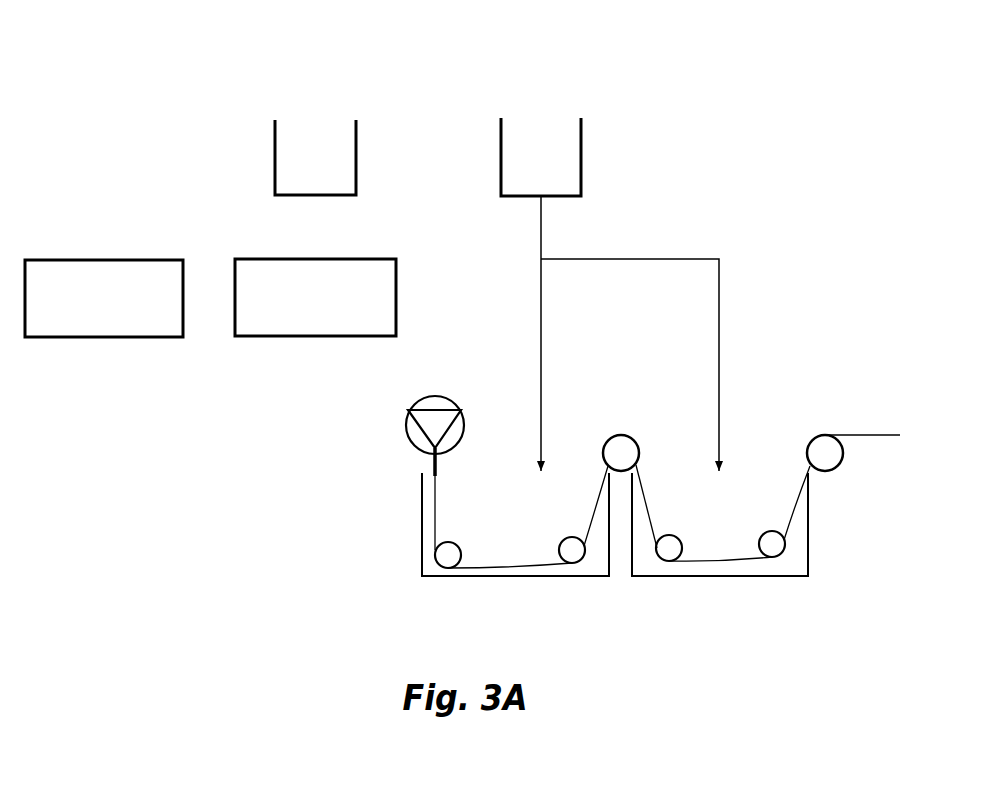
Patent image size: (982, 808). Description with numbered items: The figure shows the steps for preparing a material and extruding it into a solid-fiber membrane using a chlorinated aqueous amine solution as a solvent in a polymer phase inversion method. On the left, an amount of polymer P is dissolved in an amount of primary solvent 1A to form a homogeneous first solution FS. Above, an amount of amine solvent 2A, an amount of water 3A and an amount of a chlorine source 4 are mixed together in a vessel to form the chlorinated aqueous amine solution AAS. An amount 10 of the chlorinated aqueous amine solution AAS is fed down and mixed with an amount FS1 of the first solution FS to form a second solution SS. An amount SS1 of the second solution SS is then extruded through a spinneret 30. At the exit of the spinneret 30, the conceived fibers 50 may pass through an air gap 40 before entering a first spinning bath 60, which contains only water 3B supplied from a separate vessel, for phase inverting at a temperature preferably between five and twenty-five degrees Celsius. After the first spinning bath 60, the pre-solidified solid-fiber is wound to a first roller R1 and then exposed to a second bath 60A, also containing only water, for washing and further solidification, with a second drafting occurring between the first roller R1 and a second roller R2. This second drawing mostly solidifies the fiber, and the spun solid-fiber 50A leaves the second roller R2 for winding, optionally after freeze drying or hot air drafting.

The amine solvent 2A is at (290, 118).
The chlorine source 4 is at (317, 118).
The water 3A is at (343, 118).
The chlorinated aqueous amine solution AAS is at (315, 157).
The amount of chlorinated aqueous amine solution 10 is at (317, 257).
The polymer P is at (90, 258).
The primary solvent 1A is at (117, 258).
The first solution FS is at (104, 298).
The amount of first solution FS1 is at (183, 297).
The second solution SS is at (315, 297).
The amount of second solution SS1 is at (408, 408).
The spinneret 30 is at (435, 425).
The air gap 40 is at (446, 462).
The conceived fibers 50 is at (446, 513).
The first spinning bath 60 is at (515, 521).
The first roller R1 is at (621, 453).
The second bath 60A is at (721, 520).
The second roller R2 is at (825, 453).
The spun solid-fiber 50A is at (864, 425).
The water 3B is at (610, 294).